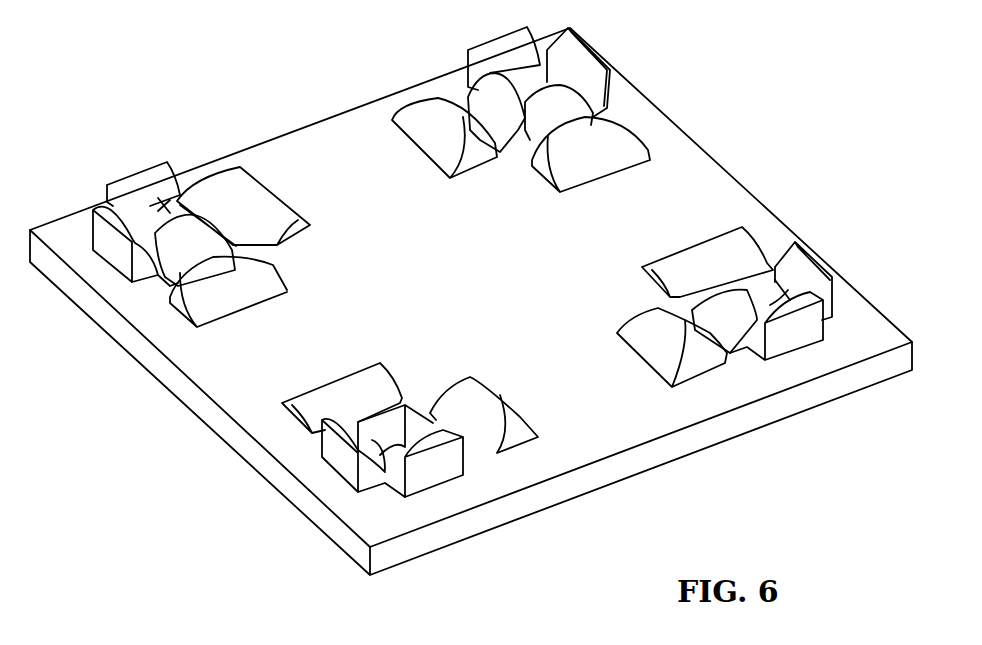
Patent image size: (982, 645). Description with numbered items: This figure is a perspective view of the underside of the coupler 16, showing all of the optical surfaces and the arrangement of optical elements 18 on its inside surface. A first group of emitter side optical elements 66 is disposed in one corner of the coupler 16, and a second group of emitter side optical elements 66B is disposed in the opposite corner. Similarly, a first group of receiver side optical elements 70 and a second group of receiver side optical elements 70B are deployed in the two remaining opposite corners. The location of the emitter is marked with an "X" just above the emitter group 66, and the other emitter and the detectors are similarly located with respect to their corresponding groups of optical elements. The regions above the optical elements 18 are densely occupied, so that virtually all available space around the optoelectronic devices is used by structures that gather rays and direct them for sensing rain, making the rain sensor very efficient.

The coupler 16 is at (573, 497).
The optical elements 18 is at (734, 50).
The first group of emitter side optical elements 66 is at (207, 178).
The second group of emitter side optical elements 66B is at (765, 238).
The first group of receiver side optical elements 70 is at (288, 455).
The second group of receiver side optical elements 70B is at (517, 55).